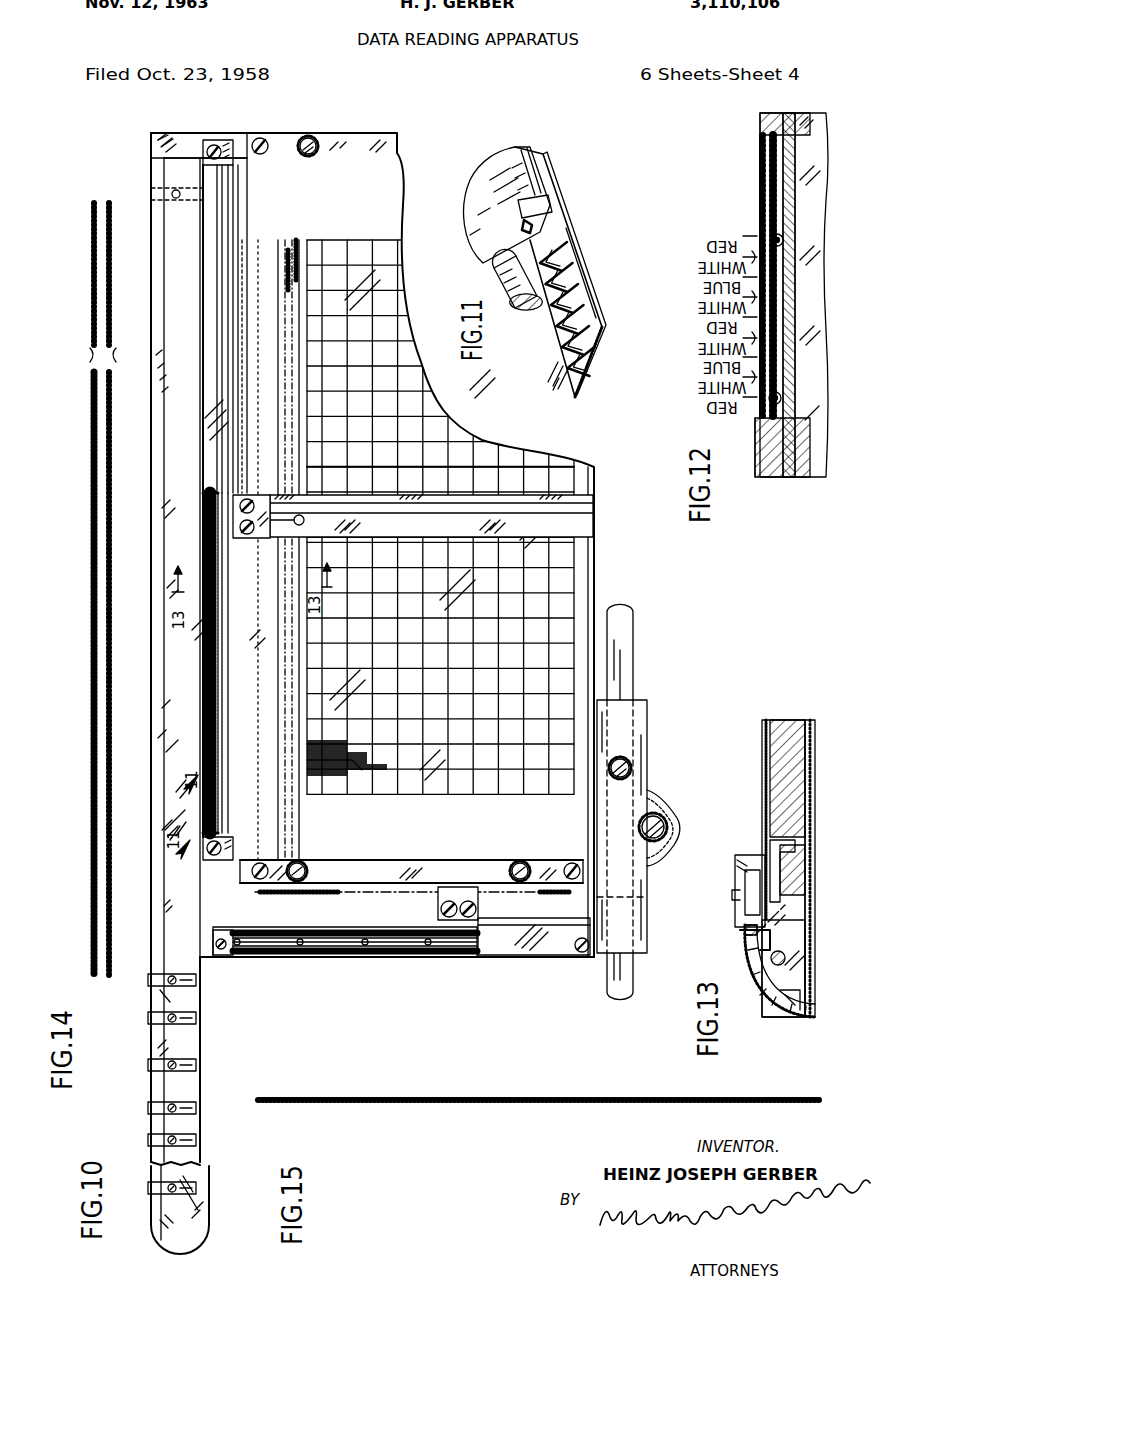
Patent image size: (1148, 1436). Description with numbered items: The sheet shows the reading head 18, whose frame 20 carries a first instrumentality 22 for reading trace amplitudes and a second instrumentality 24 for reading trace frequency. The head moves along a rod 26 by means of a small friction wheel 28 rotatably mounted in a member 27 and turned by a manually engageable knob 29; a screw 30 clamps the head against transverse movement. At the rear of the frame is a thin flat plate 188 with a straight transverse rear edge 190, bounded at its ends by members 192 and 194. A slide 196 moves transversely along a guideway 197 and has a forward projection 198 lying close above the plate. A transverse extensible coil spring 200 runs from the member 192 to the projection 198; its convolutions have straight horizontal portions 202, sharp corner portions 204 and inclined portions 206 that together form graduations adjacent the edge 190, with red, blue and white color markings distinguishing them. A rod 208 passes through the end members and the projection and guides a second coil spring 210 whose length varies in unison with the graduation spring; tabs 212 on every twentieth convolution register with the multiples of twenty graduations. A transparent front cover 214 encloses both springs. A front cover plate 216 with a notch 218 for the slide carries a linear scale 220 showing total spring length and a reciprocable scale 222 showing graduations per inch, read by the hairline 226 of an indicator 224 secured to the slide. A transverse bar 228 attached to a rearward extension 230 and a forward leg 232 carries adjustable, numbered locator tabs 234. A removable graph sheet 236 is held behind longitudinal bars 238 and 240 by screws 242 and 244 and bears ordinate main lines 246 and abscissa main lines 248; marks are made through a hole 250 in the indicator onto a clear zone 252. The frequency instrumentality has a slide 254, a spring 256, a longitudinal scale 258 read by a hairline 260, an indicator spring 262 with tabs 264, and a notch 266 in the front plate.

In FIG. 14, the reading head 18 is at (545, 982).
In FIG. 14, the frame 20 is at (228, 138).
In FIG. 14, the first instrumentality 22 is at (176, 636).
In FIG. 14, the second instrumentality 24 is at (290, 982).
In FIG. 14, the rod 26 is at (632, 628).
In FIG. 14, the member 27 is at (648, 906).
In FIG. 14, the friction wheel 28 is at (666, 800).
In FIG. 14, the knob 29 is at (662, 833).
In FIG. 14, the screw 30 is at (638, 744).
In FIG. 14, the plate 188 is at (207, 290).
In FIG. 11, the plate 188 is at (602, 249).
In FIG. 12, the plate 188 is at (760, 162).
In FIG. 13, the plate 188 is at (806, 930).
In FIG. 14, the rear edge 190 is at (215, 350).
In FIG. 11, the rear edge 190 is at (614, 313).
In FIG. 12, the rear edge 190 is at (755, 178).
In FIG. 13, the rear edge 190 is at (808, 999).
In FIG. 14, the member 192 is at (214, 859).
In FIG. 14, the member 194 is at (215, 142).
In FIG. 14, the slide 196 is at (262, 536).
In FIG. 13, the slide 196 is at (744, 876).
In FIG. 13, the guideway 197 is at (810, 846).
In FIG. 14, the forward projection 198 is at (202, 496).
In FIG. 13, the forward projection 198 is at (766, 962).
In FIG. 14, the coil spring 200 is at (204, 812).
In FIG. 11, the coil spring 200 is at (554, 316).
In FIG. 13, the coil spring 200 is at (787, 1016).
In FIG. 11, the straight portions 202 is at (604, 322).
In FIG. 11, the corner portions 204 is at (574, 243).
In FIG. 12, the corner portions 204 is at (757, 228).
In FIG. 11, the inclined convolution portions 206 is at (566, 225).
In FIG. 14, the rod 208 is at (216, 406).
In FIG. 12, the rod 208 is at (799, 212).
In FIG. 13, the rod 208 is at (806, 924).
In FIG. 14, the coil spring 210 is at (269, 712).
In FIG. 12, the coil spring 210 is at (795, 322).
In FIG. 14, the tabs 212 is at (204, 694).
In FIG. 12, the tabs 212 is at (793, 246).
In FIG. 12, the front shield or cover 214 is at (758, 459).
In FIG. 13, the front shield or cover 214 is at (756, 989).
In FIG. 14, the front cover plate 216 is at (246, 282).
In FIG. 13, the front cover plate 216 is at (764, 762).
In FIG. 14, the slot or notch 218 is at (233, 440).
In FIG. 14, the scale 220 is at (115, 582).
In FIG. 14, the scale 222 is at (98, 612).
In FIG. 14, the indicator 224 is at (428, 534).
In FIG. 13, the indicator 224 is at (764, 814).
In FIG. 14, the hairline 226 is at (458, 534).
In FIG. 14, the transverse bar 228 is at (152, 901).
In FIG. 14, the rearward extension 230 is at (162, 132).
In FIG. 14, the forward leg 232 is at (205, 1071).
In FIG. 14, the locator tabs 234 is at (158, 987).
In FIG. 10, the locator tabs 234 is at (173, 1198).
In FIG. 14, the graph sheet 236 is at (447, 858).
In FIG. 14, the longitudinal bar 238 is at (364, 860).
In FIG. 14, the longitudinal bar 240 is at (402, 163).
In FIG. 14, the screw 242 is at (298, 860).
In FIG. 14, the screw 244 is at (318, 150).
In FIG. 14, the main lines 246 is at (350, 456).
In FIG. 14, the main lines 248 is at (362, 614).
In FIG. 14, the hole 250 is at (284, 500).
In FIG. 14, the clear zone 252 is at (287, 616).
In FIG. 14, the slide 254 is at (480, 920).
In FIG. 14, the spring 256 is at (349, 958).
In FIG. 14, the longitudinal scale 258 is at (280, 886).
In FIG. 15, the longitudinal scale 258 is at (441, 1098).
In FIG. 14, the hairline 260 is at (458, 890).
In FIG. 14, the spring 262 is at (393, 958).
In FIG. 14, the tabs 264 is at (306, 958).
In FIG. 14, the notch 266 is at (553, 946).